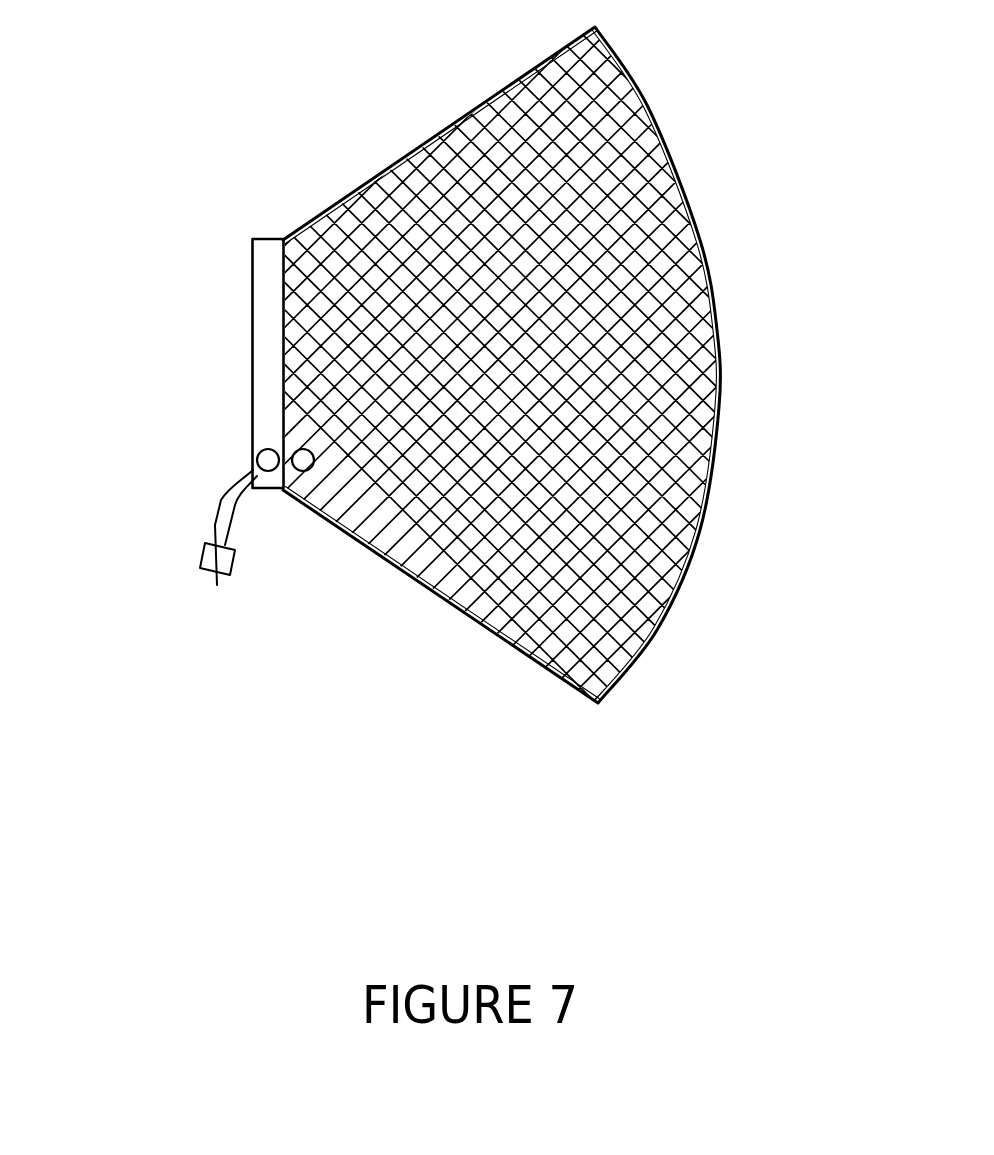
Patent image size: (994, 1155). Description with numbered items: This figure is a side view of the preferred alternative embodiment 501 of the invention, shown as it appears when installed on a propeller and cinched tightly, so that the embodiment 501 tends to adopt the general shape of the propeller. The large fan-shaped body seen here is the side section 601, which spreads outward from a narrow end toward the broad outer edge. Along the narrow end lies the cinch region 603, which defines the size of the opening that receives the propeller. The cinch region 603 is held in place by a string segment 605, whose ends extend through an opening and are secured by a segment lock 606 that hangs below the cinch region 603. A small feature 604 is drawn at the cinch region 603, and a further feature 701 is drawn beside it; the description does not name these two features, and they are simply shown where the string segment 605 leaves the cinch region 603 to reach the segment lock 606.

The alternative embodiment 501 is at (647, 103).
The side section 601 is at (655, 218).
The cinch region 603 is at (265, 322).
The pivot hole 604 is at (255, 450).
The string segment 605 is at (227, 492).
The segment lock 606 is at (202, 552).
The pivot pin 701 is at (315, 468).